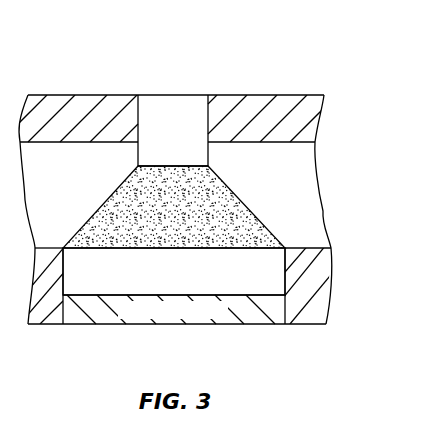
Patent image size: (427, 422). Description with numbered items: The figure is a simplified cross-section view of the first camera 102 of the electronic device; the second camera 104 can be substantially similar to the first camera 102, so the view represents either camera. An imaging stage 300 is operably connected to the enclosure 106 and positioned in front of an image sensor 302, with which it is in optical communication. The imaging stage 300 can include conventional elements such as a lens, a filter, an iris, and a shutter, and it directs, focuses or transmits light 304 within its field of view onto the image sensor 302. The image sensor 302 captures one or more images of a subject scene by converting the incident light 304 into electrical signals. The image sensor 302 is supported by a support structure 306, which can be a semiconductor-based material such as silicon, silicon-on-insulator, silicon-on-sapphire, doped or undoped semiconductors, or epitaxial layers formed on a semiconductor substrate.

The first camera 102 is at (184, 196).
The second camera 104 is at (184, 196).
The enclosure 106 is at (310, 126).
The imaging stage 300 is at (177, 102).
The image sensor 302 is at (240, 288).
The light 304 is at (250, 211).
The support structure 306 is at (90, 323).